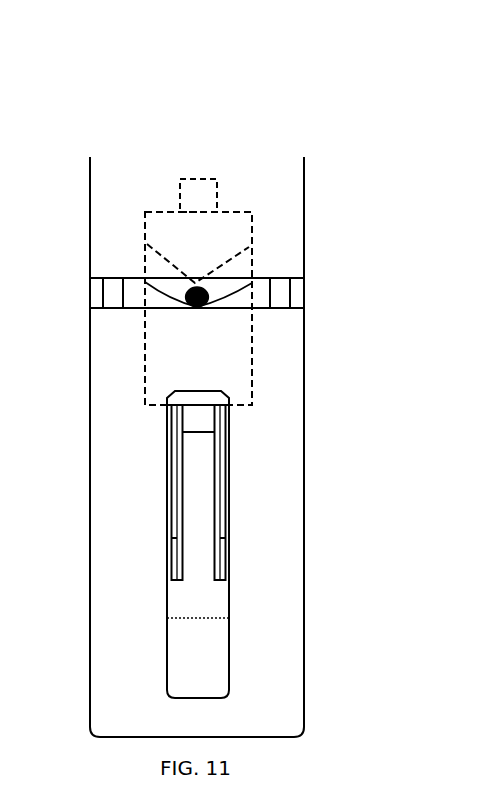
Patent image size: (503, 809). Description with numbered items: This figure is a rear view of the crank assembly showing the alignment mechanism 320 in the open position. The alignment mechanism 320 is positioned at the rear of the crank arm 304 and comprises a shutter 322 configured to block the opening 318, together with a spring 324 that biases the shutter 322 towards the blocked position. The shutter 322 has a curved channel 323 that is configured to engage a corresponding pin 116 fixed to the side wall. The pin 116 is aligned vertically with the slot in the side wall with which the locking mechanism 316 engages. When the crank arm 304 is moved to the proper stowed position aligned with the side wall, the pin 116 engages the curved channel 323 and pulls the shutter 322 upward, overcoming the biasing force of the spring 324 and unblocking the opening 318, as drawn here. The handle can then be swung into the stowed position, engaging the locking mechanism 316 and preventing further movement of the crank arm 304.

The crank arm 304 is at (267, 195).
The spring 324 is at (180, 180).
The curved channel 323 is at (158, 272).
The pin 116 is at (208, 295).
The shutter 322 is at (220, 350).
The alignment mechanism 320 is at (273, 388).
The opening 318 is at (167, 503).
The locking mechanism 316 is at (197, 507).